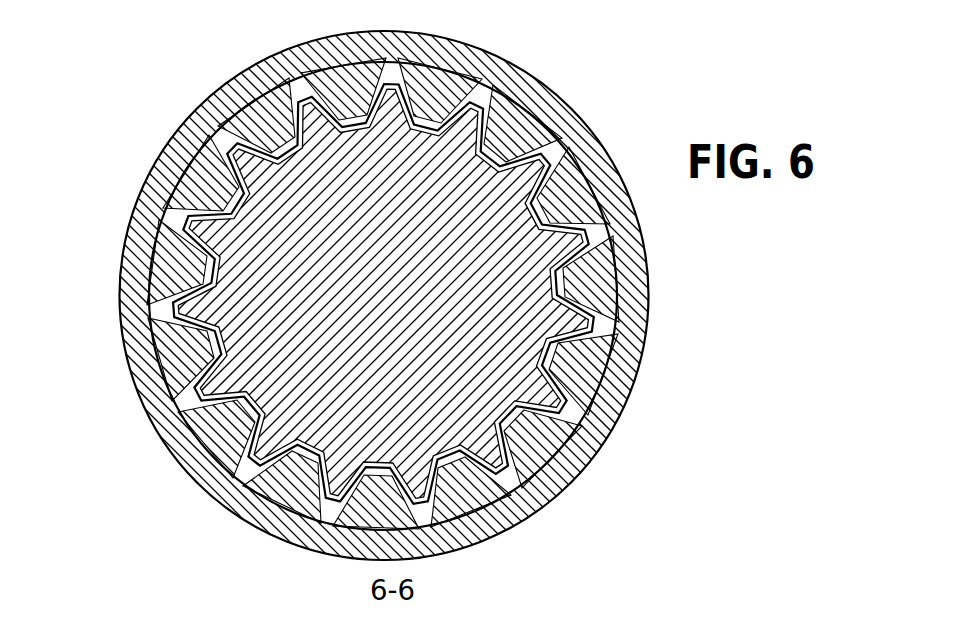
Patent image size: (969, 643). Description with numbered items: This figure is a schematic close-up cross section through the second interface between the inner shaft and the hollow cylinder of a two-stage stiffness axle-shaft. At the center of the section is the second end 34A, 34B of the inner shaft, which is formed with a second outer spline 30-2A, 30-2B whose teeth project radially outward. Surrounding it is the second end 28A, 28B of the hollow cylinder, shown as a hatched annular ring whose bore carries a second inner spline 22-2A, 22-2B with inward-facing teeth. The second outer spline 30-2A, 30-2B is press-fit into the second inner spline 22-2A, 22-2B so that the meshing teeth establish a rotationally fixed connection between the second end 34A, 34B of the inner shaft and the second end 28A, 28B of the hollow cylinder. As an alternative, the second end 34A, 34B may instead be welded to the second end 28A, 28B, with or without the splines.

The second inner spline 22-2A is at (416, 263).
The second inner spline 22-2B is at (427, 107).
The second outer spline 30-2A is at (445, 321).
The second outer spline 30-2B is at (473, 106).
The second end of the inner shaft 34A is at (353, 321).
The second end of the inner shaft 34B is at (383, 372).
The second end of the hollow cylinder 28A is at (385, 321).
The second end of the hollow cylinder 28B is at (320, 533).